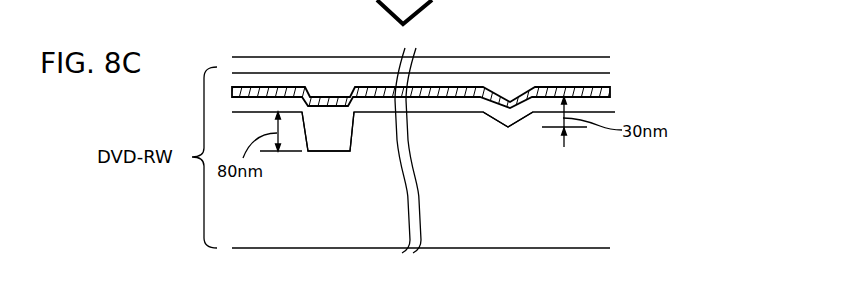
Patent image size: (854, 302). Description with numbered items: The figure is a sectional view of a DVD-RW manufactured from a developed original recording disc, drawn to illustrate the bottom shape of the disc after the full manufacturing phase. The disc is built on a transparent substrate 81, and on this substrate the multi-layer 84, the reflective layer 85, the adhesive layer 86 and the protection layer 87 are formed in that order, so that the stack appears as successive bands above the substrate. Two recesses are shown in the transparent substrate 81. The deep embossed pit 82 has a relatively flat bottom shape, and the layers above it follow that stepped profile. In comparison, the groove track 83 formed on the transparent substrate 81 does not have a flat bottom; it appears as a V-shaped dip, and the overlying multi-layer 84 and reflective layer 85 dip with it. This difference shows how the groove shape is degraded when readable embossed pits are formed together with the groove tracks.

The transparent substrate 81 is at (583, 198).
The deep embossed pit 82 is at (328, 152).
The groove track 83 is at (508, 128).
The multi-layer 84 is at (592, 103).
The reflective layer 85 is at (610, 88).
The adhesive layer 86 is at (588, 78).
The protection layer 87 is at (578, 62).